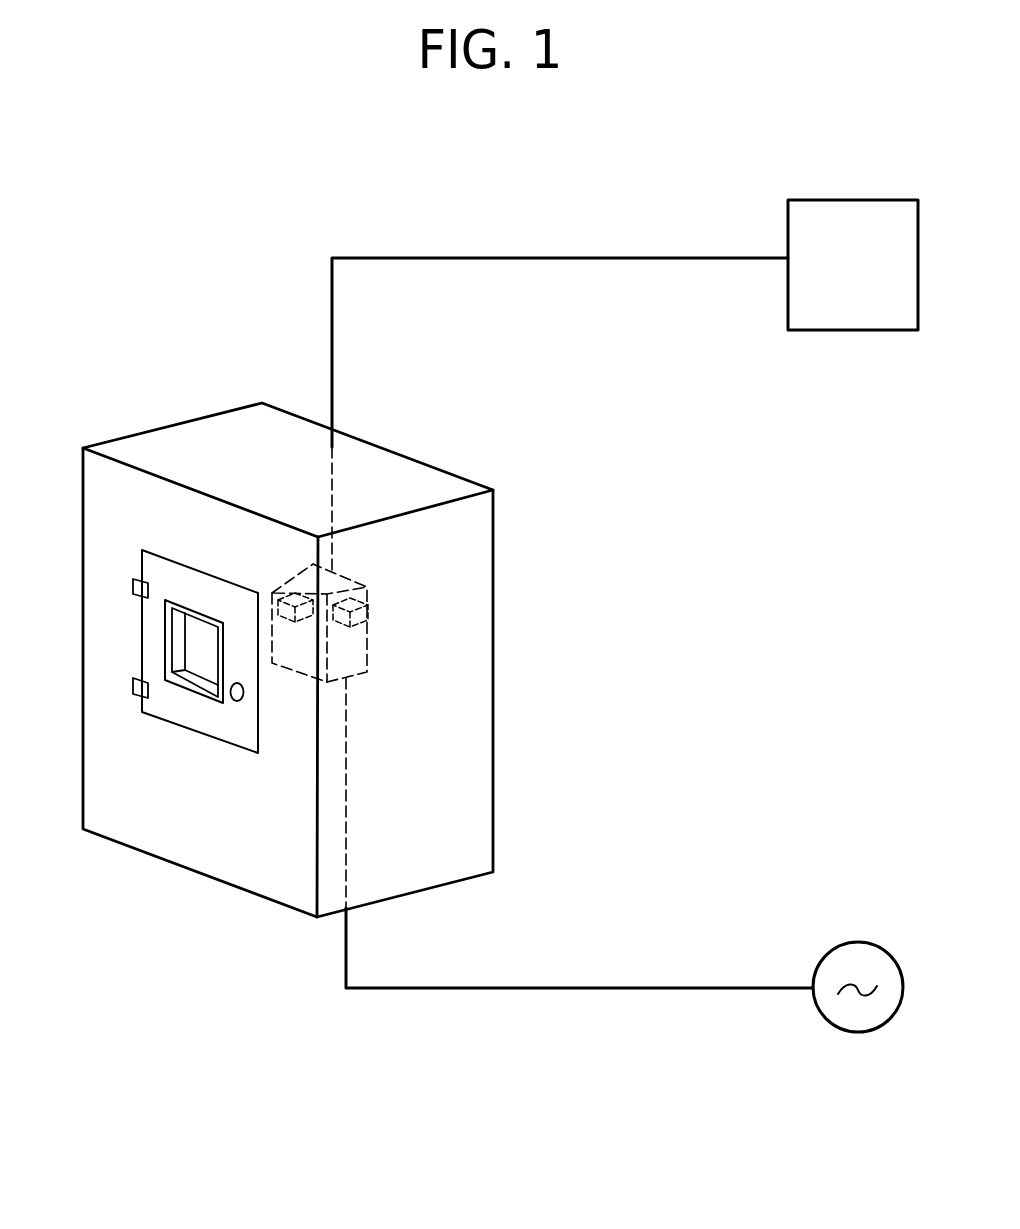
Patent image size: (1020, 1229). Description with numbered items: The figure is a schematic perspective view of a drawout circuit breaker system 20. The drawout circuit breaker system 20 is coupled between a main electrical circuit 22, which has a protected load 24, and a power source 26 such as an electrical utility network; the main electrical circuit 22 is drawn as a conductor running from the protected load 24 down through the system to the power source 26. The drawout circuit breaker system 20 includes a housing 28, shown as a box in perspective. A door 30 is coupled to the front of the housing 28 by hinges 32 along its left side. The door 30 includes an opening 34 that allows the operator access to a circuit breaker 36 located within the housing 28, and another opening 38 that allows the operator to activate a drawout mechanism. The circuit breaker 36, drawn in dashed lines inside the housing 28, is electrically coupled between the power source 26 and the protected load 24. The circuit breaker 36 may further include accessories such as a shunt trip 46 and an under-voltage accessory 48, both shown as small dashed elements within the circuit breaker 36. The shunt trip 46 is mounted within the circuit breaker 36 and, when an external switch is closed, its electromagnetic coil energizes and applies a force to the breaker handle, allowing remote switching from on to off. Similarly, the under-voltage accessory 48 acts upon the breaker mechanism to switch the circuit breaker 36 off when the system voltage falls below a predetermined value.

The drawout circuit breaker system 20 is at (166, 202).
The main electrical circuit 22 is at (536, 258).
The protected load 24 is at (812, 200).
The power source 26 is at (825, 958).
The housing 28 is at (140, 435).
The door 30 is at (175, 726).
The hinges 32 is at (133, 582).
The opening 34 is at (208, 697).
The circuit breaker 36 is at (367, 655).
The opening 38 is at (243, 693).
The shunt trip 46 is at (293, 599).
The under-voltage accessory 48 is at (360, 613).